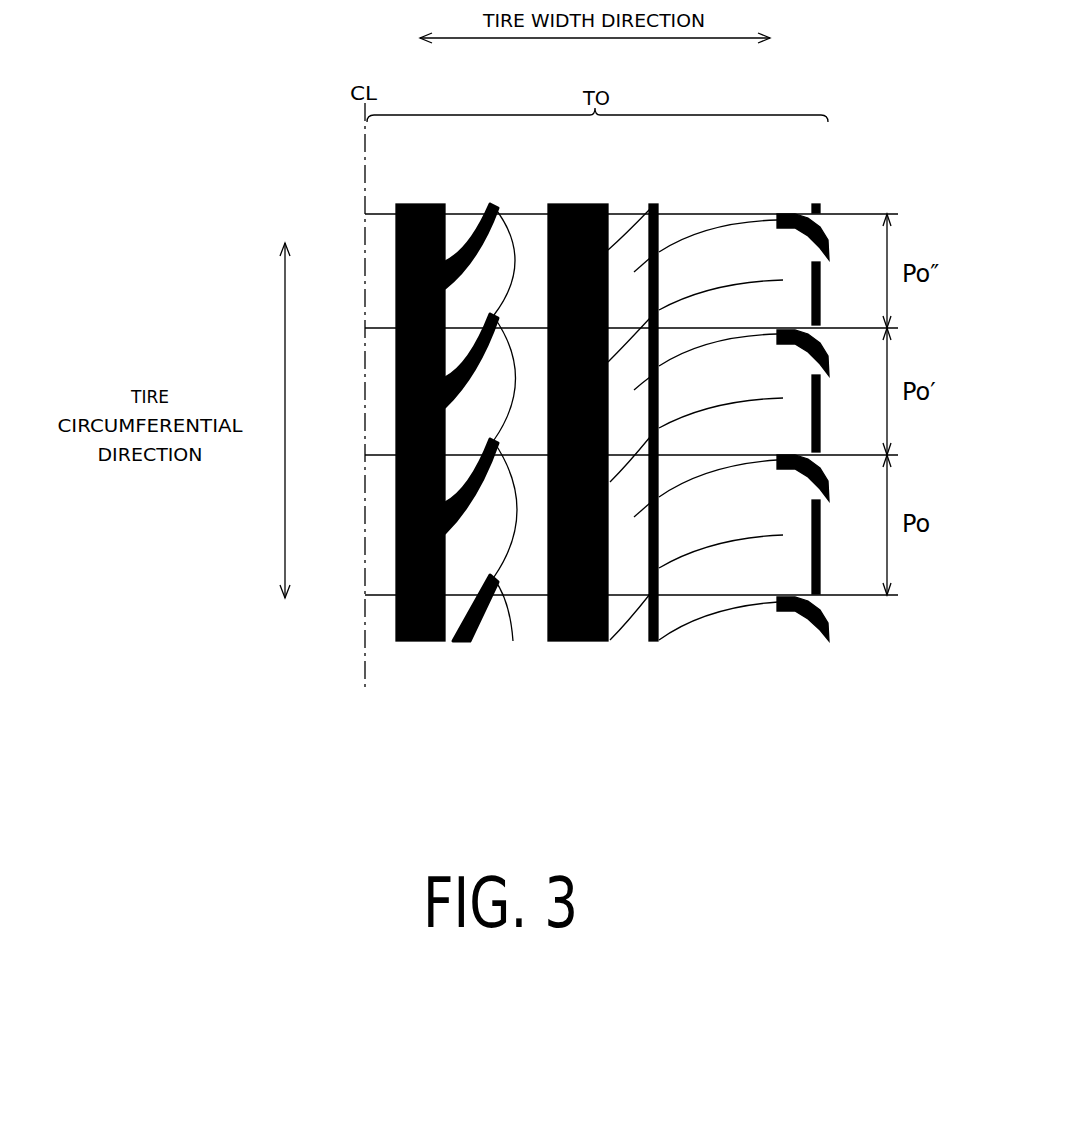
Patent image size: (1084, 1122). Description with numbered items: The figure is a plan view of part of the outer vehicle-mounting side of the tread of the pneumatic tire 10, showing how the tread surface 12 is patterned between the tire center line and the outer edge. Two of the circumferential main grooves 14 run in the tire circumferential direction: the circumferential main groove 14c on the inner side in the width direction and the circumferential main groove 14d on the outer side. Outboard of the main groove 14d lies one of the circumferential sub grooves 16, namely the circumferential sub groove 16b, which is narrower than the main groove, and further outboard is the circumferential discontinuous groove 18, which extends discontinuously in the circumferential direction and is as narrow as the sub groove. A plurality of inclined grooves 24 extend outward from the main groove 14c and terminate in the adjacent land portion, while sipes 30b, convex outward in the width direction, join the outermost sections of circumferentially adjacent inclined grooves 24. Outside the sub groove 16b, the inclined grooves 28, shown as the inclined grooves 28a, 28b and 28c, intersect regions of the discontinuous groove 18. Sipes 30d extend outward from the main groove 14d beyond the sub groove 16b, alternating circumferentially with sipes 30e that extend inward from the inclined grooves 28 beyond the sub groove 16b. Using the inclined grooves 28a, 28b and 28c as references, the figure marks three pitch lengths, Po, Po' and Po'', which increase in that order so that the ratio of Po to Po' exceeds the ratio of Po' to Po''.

The pneumatic tire 10 is at (631, 371).
The tread surface 12 is at (527, 230).
The circumferential main grooves 14 is at (499, 494).
The circumferential main groove 14c is at (422, 641).
The circumferential main groove 14d is at (578, 641).
The circumferential sub grooves 16 is at (642, 494).
The circumferential sub groove 16b is at (657, 641).
The circumferential discontinuous groove 18 is at (820, 523).
The inclined grooves 24 is at (480, 623).
The inclined grooves 28 is at (815, 486).
The inclined groove 28a is at (792, 615).
The inclined groove 28b is at (802, 477).
The inclined groove 28c is at (800, 350).
The sipes 30b is at (513, 622).
The sipes 30d is at (693, 553).
The sipes 30e is at (733, 610).